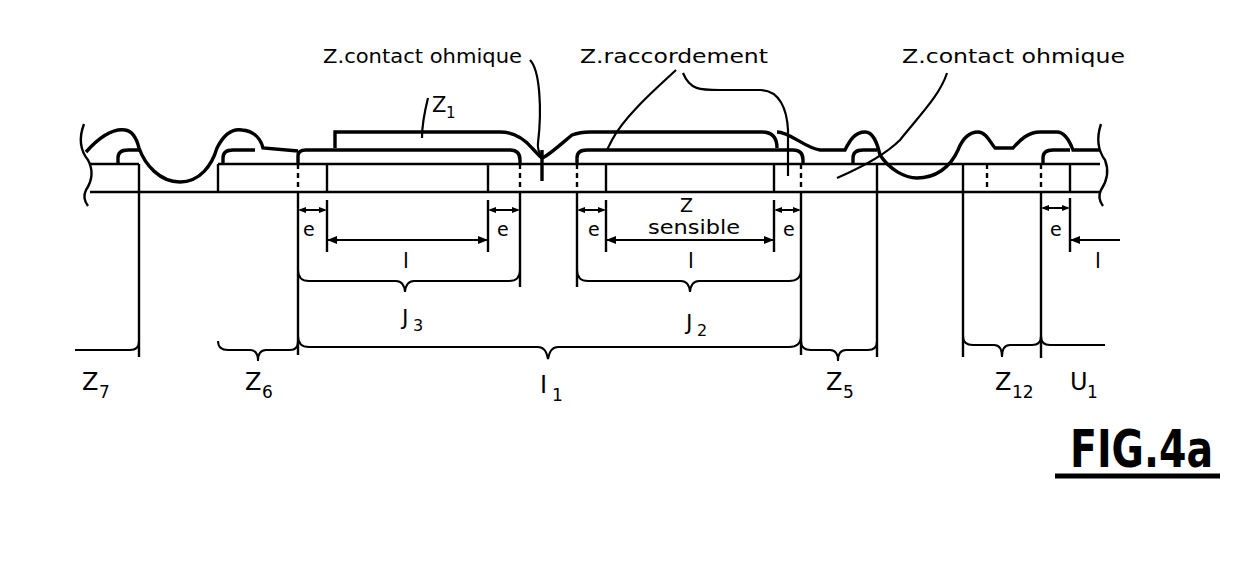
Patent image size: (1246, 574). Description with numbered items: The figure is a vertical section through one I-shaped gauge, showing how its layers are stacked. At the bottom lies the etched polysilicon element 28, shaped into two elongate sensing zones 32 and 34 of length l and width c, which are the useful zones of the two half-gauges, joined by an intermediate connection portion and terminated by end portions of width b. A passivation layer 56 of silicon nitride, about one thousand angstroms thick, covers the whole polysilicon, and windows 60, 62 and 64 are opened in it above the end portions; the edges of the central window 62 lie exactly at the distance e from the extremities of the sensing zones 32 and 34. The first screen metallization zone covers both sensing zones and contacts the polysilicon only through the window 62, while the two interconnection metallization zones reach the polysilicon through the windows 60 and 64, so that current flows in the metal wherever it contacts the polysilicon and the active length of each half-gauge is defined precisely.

The passivation layer 56 is at (143, 177).
The window 64 is at (267, 160).
The window 62 is at (540, 157).
The window 60 is at (838, 160).
The polysilicon element 28 is at (556, 194).
The sensing zone 34 is at (401, 195).
The sensing zone 32 is at (634, 193).